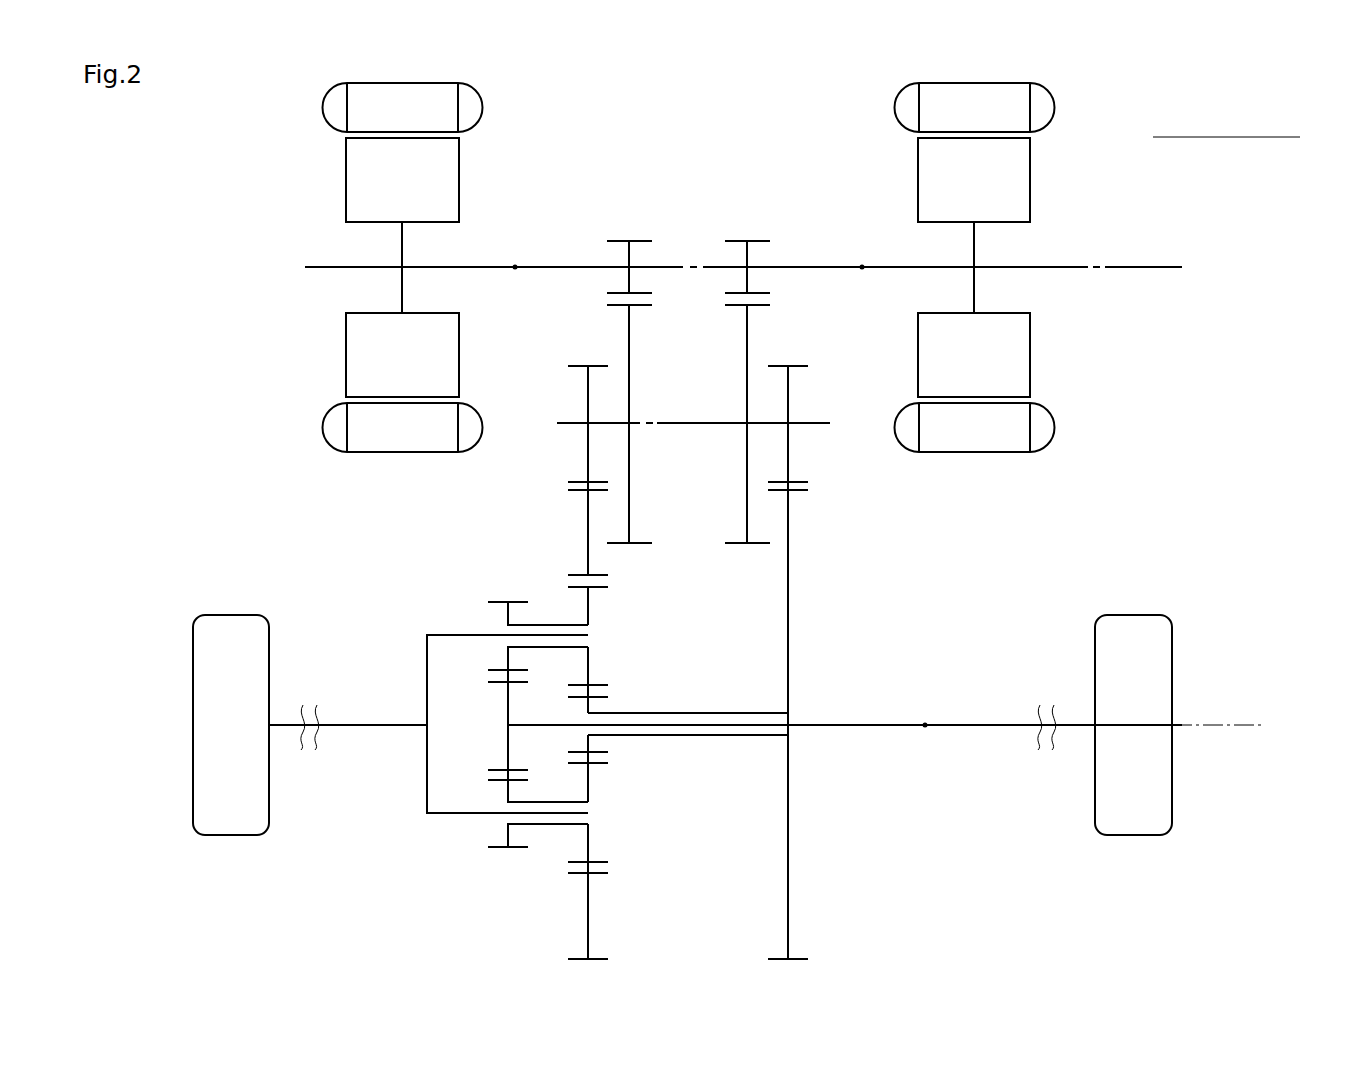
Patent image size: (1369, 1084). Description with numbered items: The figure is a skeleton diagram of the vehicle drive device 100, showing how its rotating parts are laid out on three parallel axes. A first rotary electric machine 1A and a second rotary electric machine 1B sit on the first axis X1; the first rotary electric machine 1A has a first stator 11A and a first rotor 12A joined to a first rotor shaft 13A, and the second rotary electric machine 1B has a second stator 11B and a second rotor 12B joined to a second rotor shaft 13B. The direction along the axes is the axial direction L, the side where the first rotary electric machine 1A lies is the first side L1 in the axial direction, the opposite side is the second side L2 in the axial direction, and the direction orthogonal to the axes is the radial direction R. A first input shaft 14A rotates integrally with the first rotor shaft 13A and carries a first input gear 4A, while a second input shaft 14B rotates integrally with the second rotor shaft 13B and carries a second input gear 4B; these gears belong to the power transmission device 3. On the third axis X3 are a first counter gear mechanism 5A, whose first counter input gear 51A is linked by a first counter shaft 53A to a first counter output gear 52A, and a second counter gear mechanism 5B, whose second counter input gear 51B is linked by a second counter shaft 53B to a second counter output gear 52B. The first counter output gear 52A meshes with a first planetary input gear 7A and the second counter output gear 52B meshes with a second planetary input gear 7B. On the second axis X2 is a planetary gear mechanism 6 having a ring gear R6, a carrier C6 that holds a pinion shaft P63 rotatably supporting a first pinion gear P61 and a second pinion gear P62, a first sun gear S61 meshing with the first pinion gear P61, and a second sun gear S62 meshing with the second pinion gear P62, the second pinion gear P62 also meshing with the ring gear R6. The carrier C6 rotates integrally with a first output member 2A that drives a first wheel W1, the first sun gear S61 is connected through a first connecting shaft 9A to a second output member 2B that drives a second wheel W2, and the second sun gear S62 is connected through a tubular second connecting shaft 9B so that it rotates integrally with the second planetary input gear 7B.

The vehicle drive device 100 is at (133, 231).
The first rotary electric machine 1A is at (501, 103).
The second rotary electric machine 1B is at (869, 103).
The first stator 11A is at (365, 85).
The second stator 11B is at (1007, 87).
The first rotor 12A is at (347, 186).
The second rotor 12B is at (1026, 167).
The first rotor shaft 13A is at (326, 267).
The second rotor shaft 13B is at (1032, 267).
The first input shaft 14A is at (549, 267).
The second input shaft 14B is at (808, 267).
The power transmission device 3 is at (743, 561).
The first input gear 4A is at (630, 241).
The second input gear 4B is at (748, 241).
The first counter gear mechanism 5A is at (543, 376).
The second counter gear mechanism 5B is at (829, 376).
The first counter input gear 51A is at (640, 310).
The second counter input gear 51B is at (745, 306).
The first counter output gear 52A is at (588, 366).
The second counter output gear 52B is at (789, 366).
The first counter shaft 53A is at (607, 425).
The second counter shaft 53B is at (768, 427).
The first planetary input gear 7A is at (570, 488).
The second planetary input gear 7B is at (800, 492).
The planetary gear mechanism 6 is at (470, 563).
The ring gear R6 is at (578, 575).
The first pinion gear P61 is at (497, 602).
The second pinion gear P62 is at (602, 588).
The pinion shaft P63 is at (473, 635).
The carrier C6 is at (427, 648).
The first sun gear S61 is at (500, 688).
The second sun gear S62 is at (603, 702).
The first connecting shaft 9A is at (817, 722).
The second connecting shaft 9B is at (693, 738).
The first output member 2A is at (372, 722).
The second output member 2B is at (980, 722).
The first wheel W1 is at (227, 618).
The second wheel W2 is at (1137, 618).
The first axis X1 is at (1159, 267).
The second axis X2 is at (904, 725).
The third axis X3 is at (711, 427).
The axial direction L is at (1226, 122).
The first side in the axial direction L1 is at (1163, 142).
The second side in the axial direction L2 is at (1290, 142).
The radial direction R is at (1292, 421).